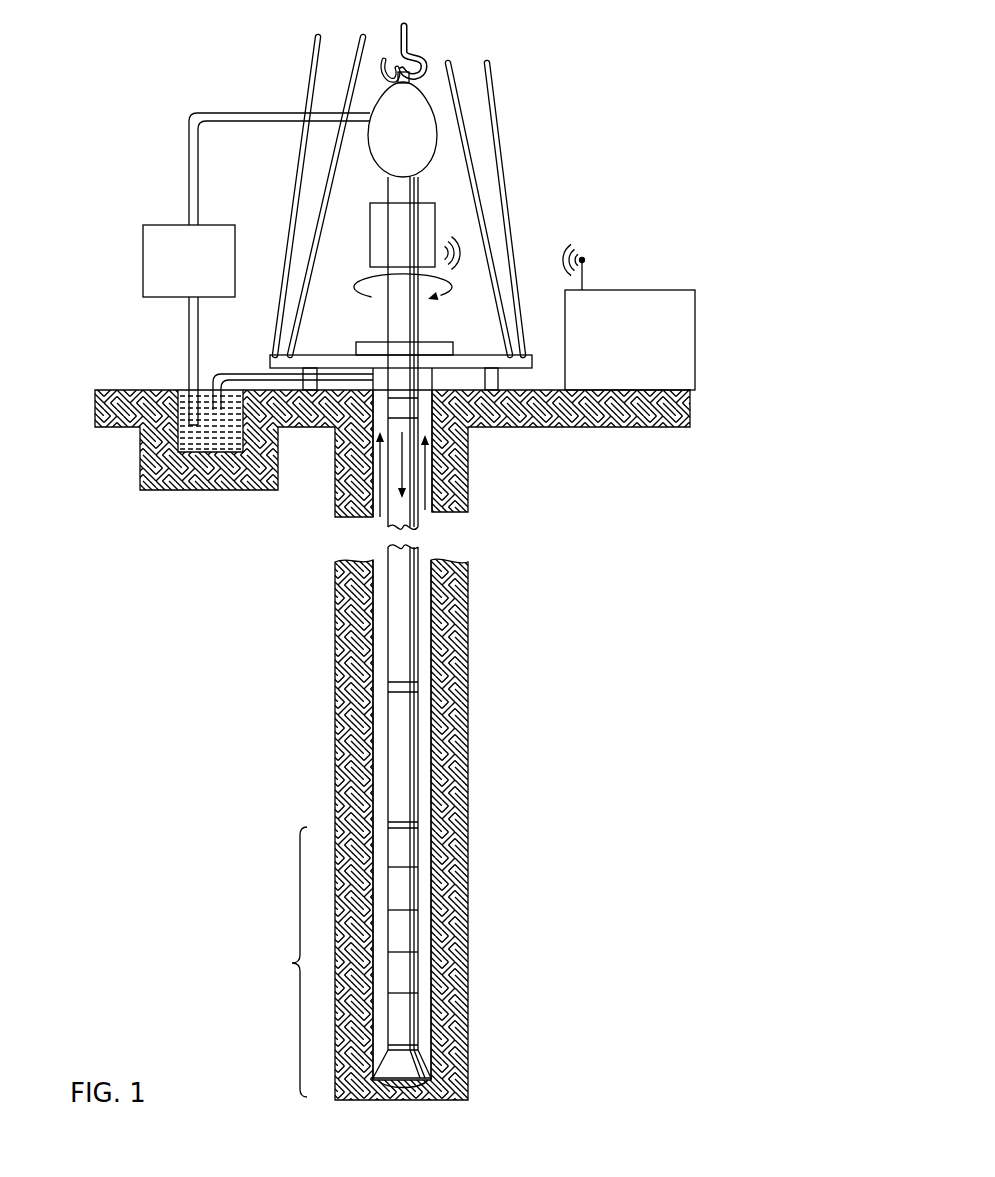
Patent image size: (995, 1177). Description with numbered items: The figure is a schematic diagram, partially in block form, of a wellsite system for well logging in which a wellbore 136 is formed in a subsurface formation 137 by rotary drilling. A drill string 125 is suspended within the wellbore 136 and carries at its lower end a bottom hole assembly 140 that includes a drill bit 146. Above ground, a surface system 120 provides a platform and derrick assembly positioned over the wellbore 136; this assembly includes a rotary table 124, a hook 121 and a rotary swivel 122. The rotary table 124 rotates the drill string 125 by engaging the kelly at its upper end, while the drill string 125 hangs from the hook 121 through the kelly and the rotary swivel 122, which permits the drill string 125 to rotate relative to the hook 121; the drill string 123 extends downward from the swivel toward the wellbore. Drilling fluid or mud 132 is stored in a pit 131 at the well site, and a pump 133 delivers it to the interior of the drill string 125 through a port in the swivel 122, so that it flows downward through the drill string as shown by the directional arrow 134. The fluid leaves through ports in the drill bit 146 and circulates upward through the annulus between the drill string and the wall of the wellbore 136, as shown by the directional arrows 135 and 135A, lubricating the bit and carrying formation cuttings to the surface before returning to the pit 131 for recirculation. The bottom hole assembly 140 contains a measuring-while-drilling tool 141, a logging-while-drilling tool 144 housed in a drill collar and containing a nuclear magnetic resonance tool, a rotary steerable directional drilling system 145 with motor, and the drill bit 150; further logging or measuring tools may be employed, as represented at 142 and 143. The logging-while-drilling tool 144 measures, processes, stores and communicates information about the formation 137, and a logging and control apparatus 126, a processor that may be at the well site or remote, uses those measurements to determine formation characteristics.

The surface system 120 is at (512, 132).
The hook 121 is at (408, 32).
The rotary swivel 122 is at (388, 146).
The drill string / kelly 123 is at (400, 322).
The rotary table 124 is at (423, 368).
The drill string 125 is at (395, 362).
The logging and control apparatus 126 is at (608, 288).
The pit 131 is at (208, 447).
The drilling fluid or mud 132 is at (178, 380).
The pump 133 is at (162, 298).
The directional arrow 134 is at (433, 478).
The directional arrow 135 is at (375, 478).
The directional arrow 135A is at (425, 457).
The wellbore 136 is at (448, 343).
The subsurface formation 137 is at (460, 620).
The bottom hole assembly 140 is at (333, 959).
The measuring-while-drilling tool 141 is at (402, 845).
The additional LWD and/or MWD tool 142 is at (402, 888).
The additional LWD and/or MWD tool 143 is at (402, 928).
The logging-while-drilling tool 144 is at (402, 973).
The rotary steerable directional drilling system 145 is at (402, 1017).
The drill bit 146 is at (402, 1065).
The drill bit 150 is at (400, 1086).